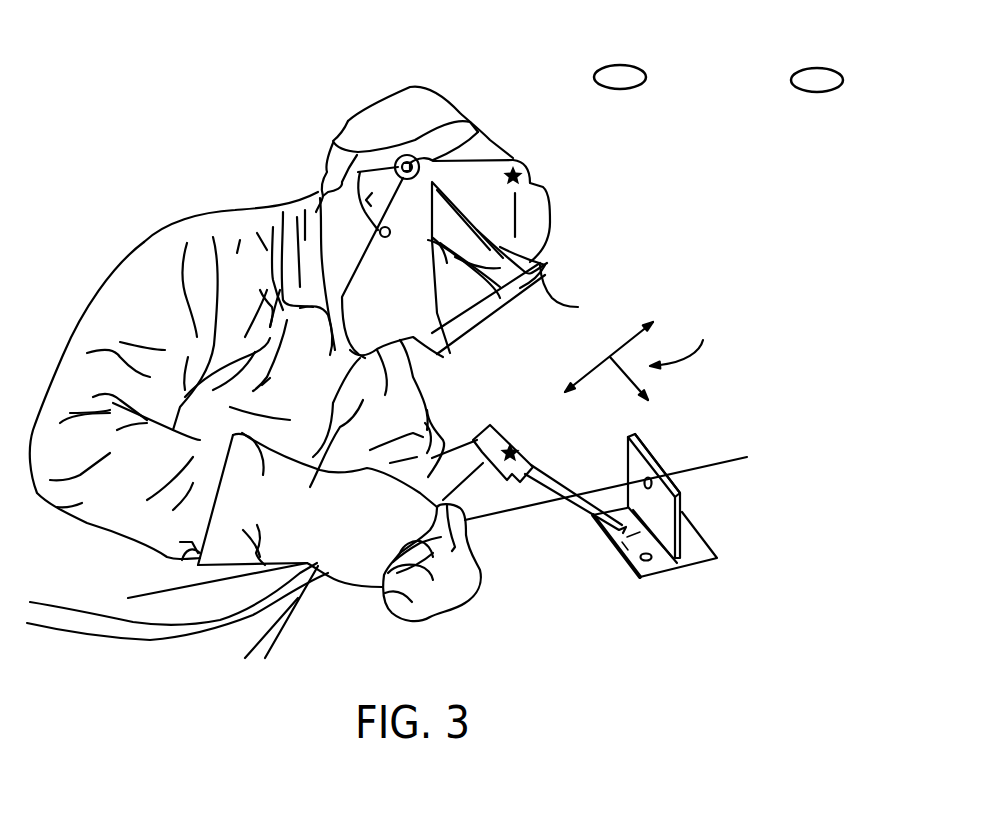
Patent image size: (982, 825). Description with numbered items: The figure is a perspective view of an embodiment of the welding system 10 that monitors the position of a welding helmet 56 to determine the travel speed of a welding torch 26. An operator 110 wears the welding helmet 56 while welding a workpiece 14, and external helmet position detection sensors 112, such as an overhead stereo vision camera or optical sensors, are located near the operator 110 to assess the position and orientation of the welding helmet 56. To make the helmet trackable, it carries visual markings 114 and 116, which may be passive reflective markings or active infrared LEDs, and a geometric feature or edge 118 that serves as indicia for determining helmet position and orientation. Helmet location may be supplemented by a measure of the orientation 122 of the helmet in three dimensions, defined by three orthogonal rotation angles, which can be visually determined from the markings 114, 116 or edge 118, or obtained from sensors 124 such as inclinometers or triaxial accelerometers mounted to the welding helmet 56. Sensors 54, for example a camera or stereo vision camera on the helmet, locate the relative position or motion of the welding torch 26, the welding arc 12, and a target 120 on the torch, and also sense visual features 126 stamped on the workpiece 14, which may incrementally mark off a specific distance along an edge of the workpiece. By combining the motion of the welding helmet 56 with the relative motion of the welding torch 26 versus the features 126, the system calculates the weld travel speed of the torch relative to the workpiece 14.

The welding system 10 is at (168, 50).
The welding arc 12 is at (634, 530).
The workpiece 14 is at (693, 544).
The welding torch 26 is at (480, 434).
The sensors 54 is at (541, 300).
The welding helmet 56 is at (403, 299).
The operator 110 is at (145, 243).
The external helmet position detection sensors 112 is at (797, 69).
The visual marking 114 is at (516, 175).
The visual marking 116 is at (516, 214).
The edge 118 is at (491, 158).
The target 120 is at (518, 448).
The orientation 122 is at (644, 354).
The sensors 124 is at (380, 232).
The visual features 126 is at (648, 478).